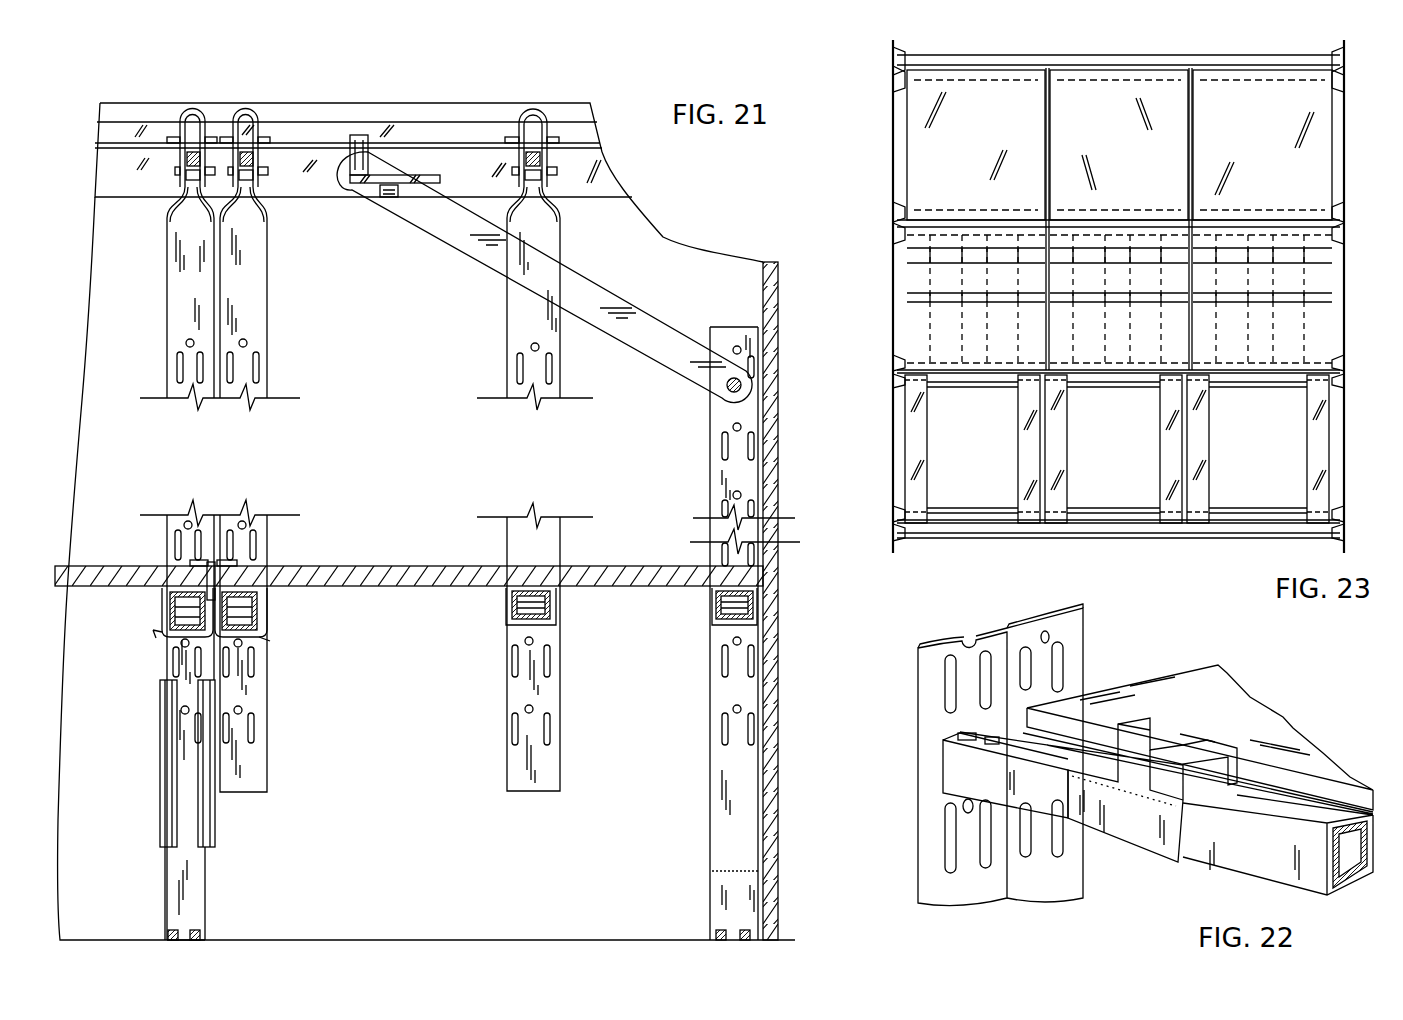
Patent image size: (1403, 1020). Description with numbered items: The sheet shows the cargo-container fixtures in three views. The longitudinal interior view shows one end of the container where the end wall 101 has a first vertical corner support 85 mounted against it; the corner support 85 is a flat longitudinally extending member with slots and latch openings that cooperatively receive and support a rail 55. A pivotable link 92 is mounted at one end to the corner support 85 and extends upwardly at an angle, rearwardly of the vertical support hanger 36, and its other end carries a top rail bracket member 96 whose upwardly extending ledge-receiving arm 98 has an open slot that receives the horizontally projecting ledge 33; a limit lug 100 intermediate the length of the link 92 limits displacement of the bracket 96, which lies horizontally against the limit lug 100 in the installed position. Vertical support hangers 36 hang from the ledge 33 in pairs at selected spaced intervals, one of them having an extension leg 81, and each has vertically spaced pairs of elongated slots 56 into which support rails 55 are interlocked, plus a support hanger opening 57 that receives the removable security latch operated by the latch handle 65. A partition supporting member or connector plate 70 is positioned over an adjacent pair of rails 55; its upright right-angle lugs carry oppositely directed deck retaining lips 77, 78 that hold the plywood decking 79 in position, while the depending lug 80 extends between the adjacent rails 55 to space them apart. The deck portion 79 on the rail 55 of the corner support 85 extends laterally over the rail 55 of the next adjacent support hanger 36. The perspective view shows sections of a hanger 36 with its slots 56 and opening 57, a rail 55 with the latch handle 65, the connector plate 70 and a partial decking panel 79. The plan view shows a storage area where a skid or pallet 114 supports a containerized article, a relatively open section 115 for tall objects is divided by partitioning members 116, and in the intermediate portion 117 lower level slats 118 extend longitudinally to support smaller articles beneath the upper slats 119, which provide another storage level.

In FIG. 21, the horizontally projecting ledge 33 is at (405, 146).
In FIG. 21, the support hanger 36 is at (170, 324).
In FIG. 22, the support hanger 36 is at (1135, 600).
In FIG. 21, the support rail 55 is at (173, 634).
In FIG. 23, the support rail 55 is at (1100, 382).
In FIG. 22, the support rail 55 is at (1272, 862).
In FIG. 21, the elongated slot opening 56 is at (197, 384).
In FIG. 22, the elongated slot opening 56 is at (1066, 660).
In FIG. 21, the support hanger opening 57 is at (249, 343).
In FIG. 22, the support hanger opening 57 is at (1048, 631).
In FIG. 22, the latch handle 65 is at (968, 757).
In FIG. 21, the partition supporting member 70 is at (272, 598).
In FIG. 22, the partition supporting member 70 is at (1105, 846).
In FIG. 21, the deck retaining lip 77 is at (242, 566).
In FIG. 21, the deck retaining lip 78 is at (160, 562).
In FIG. 21, the decking panel 79 is at (92, 568).
In FIG. 22, the decking panel 79 is at (1230, 719).
In FIG. 21, the depending lug 80 is at (263, 638).
In FIG. 21, the extension leg 81 is at (197, 861).
In FIG. 21, the corner support 85 is at (704, 803).
In FIG. 21, the pivotable link 92 is at (613, 293).
In FIG. 21, the top rail bracket member 96 is at (420, 179).
In FIG. 21, the ledge-receiving arm 98 is at (360, 135).
In FIG. 21, the limit lug 100 is at (391, 198).
In FIG. 21, the end wall 101 is at (778, 366).
In FIG. 23, the skid or pallet 114 is at (917, 434).
In FIG. 23, the storage section 115 is at (990, 149).
In FIG. 23, the partitioning member 116 is at (1050, 124).
In FIG. 23, the intermediate portion 117 is at (1318, 298).
In FIG. 23, the lower level slat 118 is at (1293, 340).
In FIG. 23, the upper slat 119 is at (1318, 322).